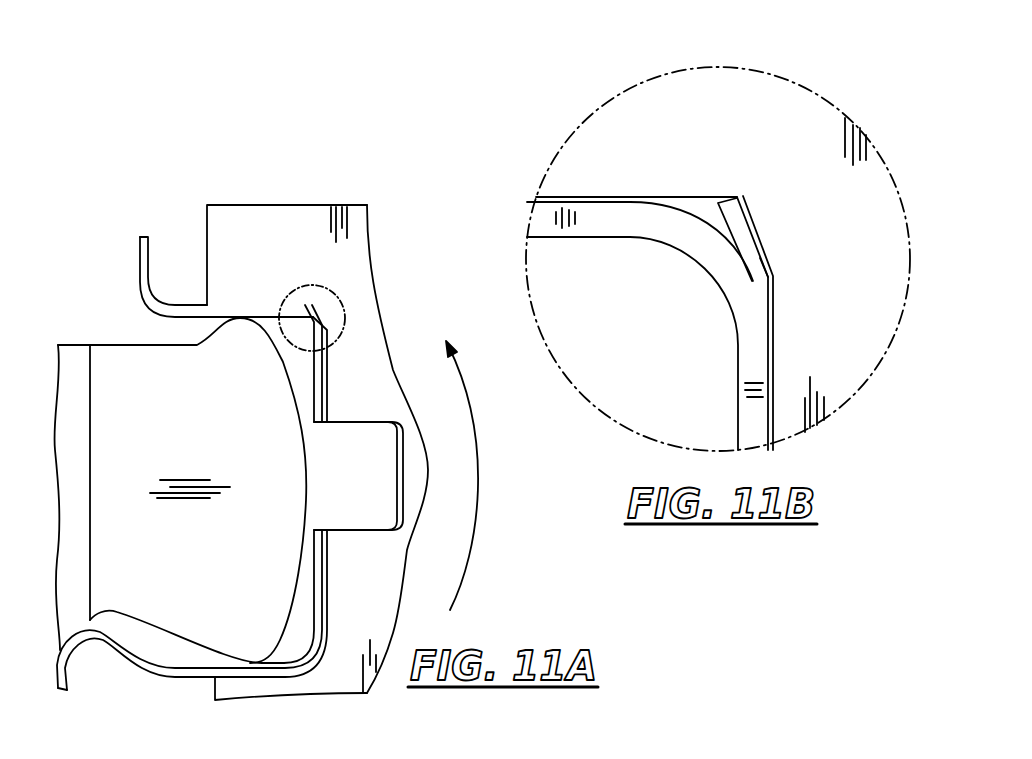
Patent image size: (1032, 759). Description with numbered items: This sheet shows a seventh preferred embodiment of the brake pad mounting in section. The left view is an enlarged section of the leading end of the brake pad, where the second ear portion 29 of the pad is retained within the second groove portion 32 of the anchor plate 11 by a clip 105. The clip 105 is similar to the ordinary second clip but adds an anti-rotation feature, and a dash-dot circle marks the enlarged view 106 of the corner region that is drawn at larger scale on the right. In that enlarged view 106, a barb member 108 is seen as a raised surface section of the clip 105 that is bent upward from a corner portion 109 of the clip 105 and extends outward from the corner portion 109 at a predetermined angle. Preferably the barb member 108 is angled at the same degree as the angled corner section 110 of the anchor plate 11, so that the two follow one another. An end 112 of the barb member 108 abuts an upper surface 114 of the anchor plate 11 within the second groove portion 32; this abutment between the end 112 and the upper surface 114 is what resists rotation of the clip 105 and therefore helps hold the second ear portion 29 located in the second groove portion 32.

In FIG. 11A, the anchor plate 11 is at (227, 303).
In FIG. 11B, the anchor plate 11 is at (683, 197).
In FIG. 11A, the second ear portion 29 is at (275, 580).
In FIG. 11A, the second groove portion 32 is at (292, 675).
In FIG. 11A, the clip 105 is at (150, 256).
In FIG. 11B, the clip 105 is at (588, 218).
In FIG. 11A, the enlarged view 106 is at (315, 282).
In FIG. 11B, the enlarged view 106 is at (797, 87).
In FIG. 11B, the barb member 108 is at (757, 240).
In FIG. 11B, the corner portion 109 is at (697, 235).
In FIG. 11B, the angled corner section 110 is at (765, 255).
In FIG. 11B, the end 112 is at (740, 197).
In FIG. 11B, the upper surface 114 is at (556, 197).